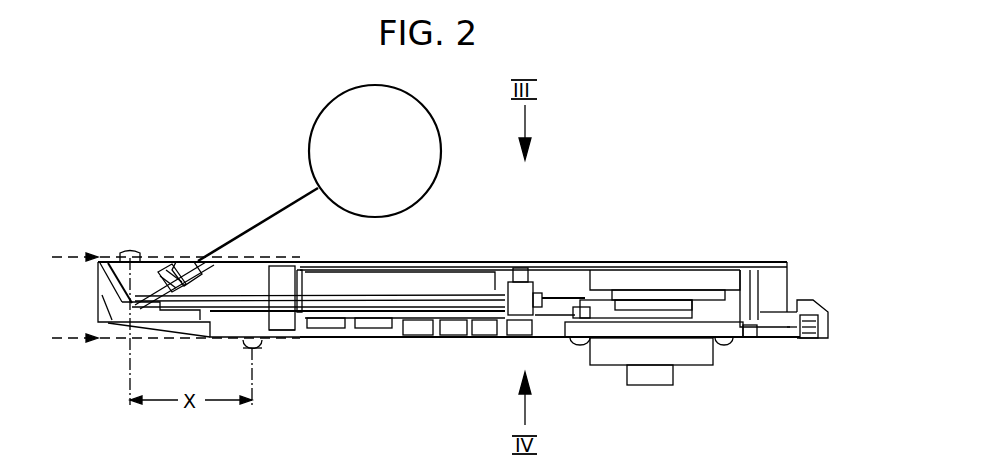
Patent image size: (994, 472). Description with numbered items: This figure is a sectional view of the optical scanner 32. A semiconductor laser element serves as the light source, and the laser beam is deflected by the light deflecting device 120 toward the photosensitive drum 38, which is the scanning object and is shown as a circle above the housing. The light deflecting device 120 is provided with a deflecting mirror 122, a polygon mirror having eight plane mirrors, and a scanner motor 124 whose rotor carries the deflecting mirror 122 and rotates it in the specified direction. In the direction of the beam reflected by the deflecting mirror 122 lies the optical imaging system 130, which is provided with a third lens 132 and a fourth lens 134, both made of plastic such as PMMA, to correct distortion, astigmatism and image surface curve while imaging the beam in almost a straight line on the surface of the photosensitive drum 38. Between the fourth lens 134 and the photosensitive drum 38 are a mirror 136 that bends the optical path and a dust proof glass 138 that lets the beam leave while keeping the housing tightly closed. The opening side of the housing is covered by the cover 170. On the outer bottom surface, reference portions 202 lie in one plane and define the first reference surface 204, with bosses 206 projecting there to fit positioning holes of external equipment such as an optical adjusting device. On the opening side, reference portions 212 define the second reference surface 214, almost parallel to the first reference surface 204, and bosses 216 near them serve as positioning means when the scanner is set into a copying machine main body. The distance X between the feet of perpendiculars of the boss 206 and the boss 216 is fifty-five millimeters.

The optical scanner 32 is at (598, 207).
The photosensitive drum 38 is at (430, 158).
The light deflecting device 120 is at (702, 368).
The deflecting mirror 122 is at (706, 292).
The scanner motor 124 is at (608, 356).
The optical imaging system 130 is at (433, 290).
The third lens 132 is at (523, 280).
The fourth lens 134 is at (296, 266).
The mirror 136 is at (108, 262).
The dust proof glass 138 is at (185, 258).
The cover 170 is at (658, 265).
The reference portions 202 is at (236, 339).
The first reference surface 204 is at (169, 353).
The bosses 206 is at (258, 348).
The reference portions 212 is at (113, 257).
The second reference surface 214 is at (165, 266).
The bosses 216 is at (138, 258).